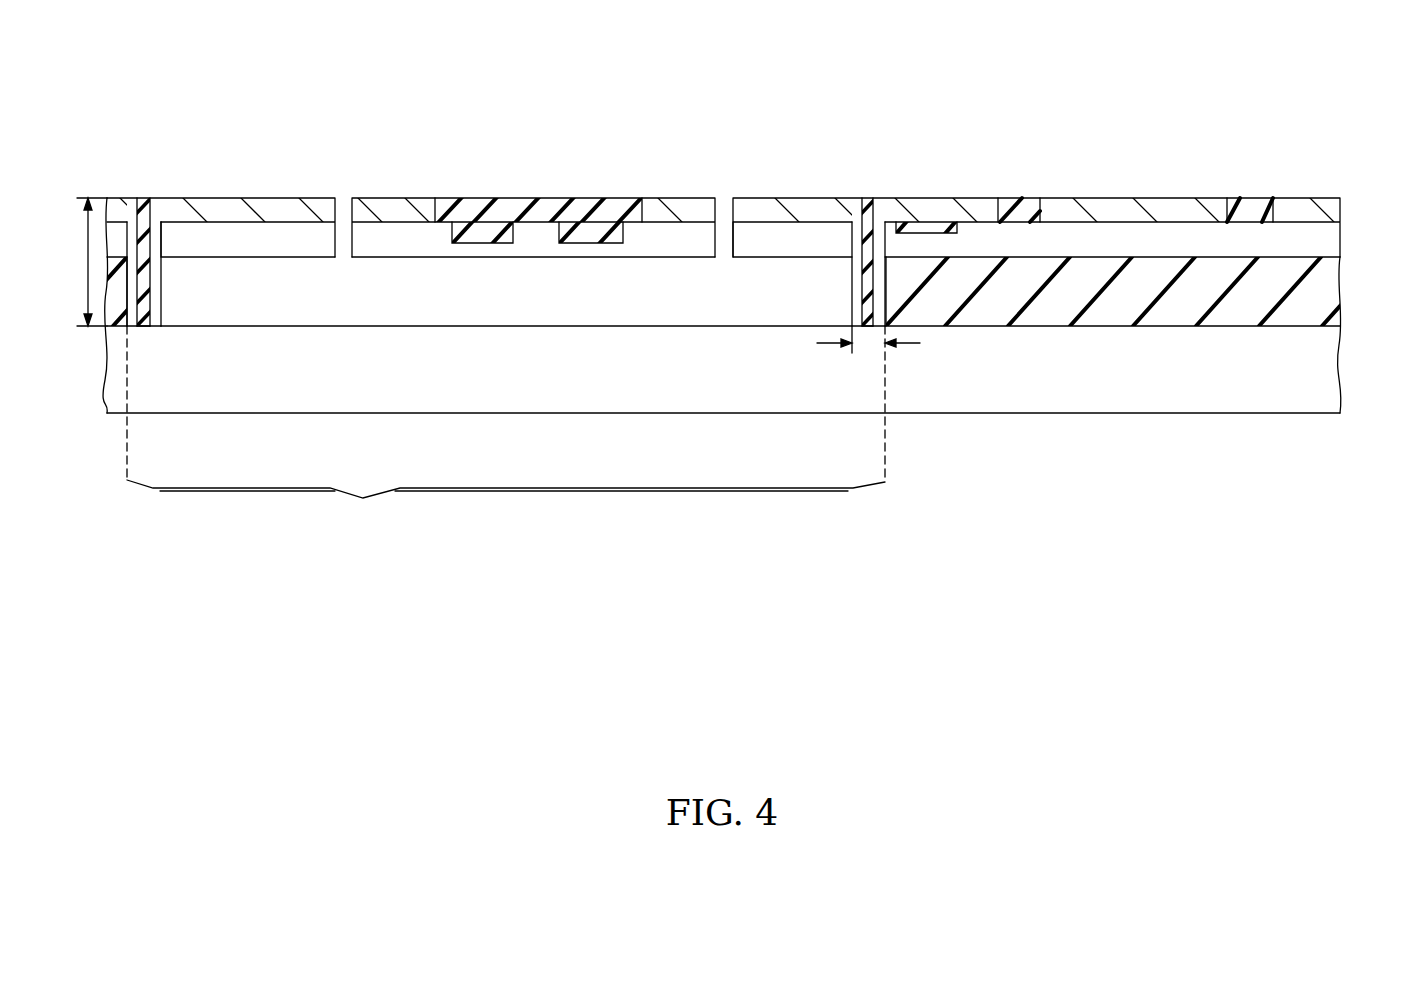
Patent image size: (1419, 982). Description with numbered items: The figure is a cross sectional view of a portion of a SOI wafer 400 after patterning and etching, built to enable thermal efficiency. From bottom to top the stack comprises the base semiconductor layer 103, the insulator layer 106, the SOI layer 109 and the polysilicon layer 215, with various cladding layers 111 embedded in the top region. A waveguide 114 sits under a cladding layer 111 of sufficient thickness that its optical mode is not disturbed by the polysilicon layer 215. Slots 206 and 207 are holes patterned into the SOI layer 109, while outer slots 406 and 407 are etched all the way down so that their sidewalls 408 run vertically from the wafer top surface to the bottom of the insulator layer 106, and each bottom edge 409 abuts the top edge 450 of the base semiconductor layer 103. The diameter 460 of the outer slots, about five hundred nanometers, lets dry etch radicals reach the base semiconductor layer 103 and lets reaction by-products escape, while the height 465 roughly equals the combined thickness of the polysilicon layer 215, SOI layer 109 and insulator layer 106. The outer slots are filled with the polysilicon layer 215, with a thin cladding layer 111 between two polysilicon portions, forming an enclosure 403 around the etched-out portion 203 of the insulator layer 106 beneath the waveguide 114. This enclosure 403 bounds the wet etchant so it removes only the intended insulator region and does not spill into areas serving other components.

The SOI wafer 400 is at (255, 110).
The height of the outer slots 465 is at (85, 238).
The outer slot 406 is at (145, 186).
The sidewalls 408 is at (165, 270).
The bottom edge 409 is at (143, 318).
The slot 206 is at (342, 195).
The cladding layer 111 is at (478, 210).
The waveguide 114 is at (527, 225).
The slot 207 is at (725, 195).
The outer slot 407 is at (861, 191).
The insulator layer 106 is at (1285, 265).
The polysilicon layer 215 is at (1342, 208).
The SOI layer 109 is at (1342, 238).
The top edge of the base semiconductor layer 450 is at (1344, 331).
The base semiconductor layer 103 is at (1342, 395).
The etched-out portion 203 is at (492, 305).
The diameter of the outer slots 460 is at (907, 343).
The enclosure 403 is at (363, 498).